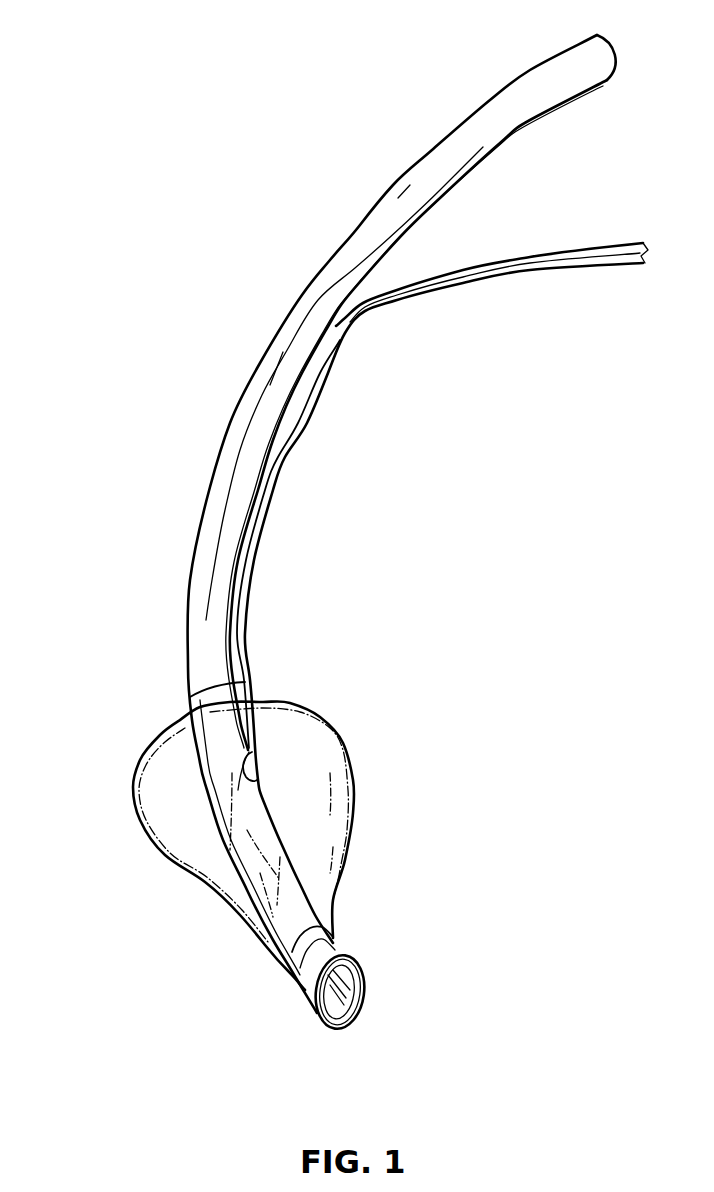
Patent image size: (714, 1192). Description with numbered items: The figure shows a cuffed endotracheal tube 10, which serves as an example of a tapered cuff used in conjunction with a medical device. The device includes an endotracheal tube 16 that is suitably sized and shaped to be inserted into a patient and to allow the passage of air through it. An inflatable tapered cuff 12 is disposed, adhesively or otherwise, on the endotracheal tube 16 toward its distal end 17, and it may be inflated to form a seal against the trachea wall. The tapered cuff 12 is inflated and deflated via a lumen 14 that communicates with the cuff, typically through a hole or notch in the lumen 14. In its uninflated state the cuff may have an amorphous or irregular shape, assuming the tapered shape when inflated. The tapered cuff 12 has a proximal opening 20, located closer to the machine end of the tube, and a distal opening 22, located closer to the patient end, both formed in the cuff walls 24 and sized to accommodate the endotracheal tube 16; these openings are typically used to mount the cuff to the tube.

The cuffed endotracheal tube 10 is at (335, 543).
The inflatable tapered cuff 12 is at (223, 831).
The lumen 14 is at (515, 273).
The endotracheal tube 16 is at (212, 492).
The distal end 17 is at (338, 1028).
The proximal opening 20 is at (200, 705).
The distal opening 22 is at (292, 955).
The cuff walls 24 is at (357, 787).